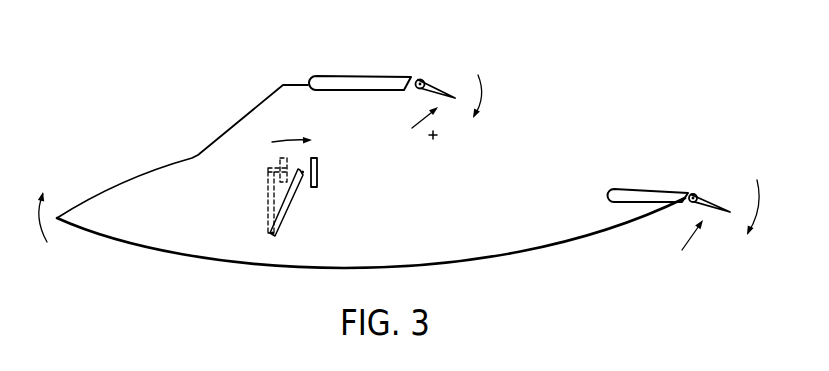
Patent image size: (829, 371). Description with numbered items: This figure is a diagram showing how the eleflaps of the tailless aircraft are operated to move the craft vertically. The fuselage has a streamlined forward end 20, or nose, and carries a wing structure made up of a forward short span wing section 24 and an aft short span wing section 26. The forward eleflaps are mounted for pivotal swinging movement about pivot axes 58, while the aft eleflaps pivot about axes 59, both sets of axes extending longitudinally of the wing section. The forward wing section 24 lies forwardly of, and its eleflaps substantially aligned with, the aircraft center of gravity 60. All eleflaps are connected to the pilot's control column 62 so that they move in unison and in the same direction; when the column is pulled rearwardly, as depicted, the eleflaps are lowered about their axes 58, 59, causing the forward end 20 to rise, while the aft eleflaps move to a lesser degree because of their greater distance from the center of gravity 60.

The forward end 20 is at (84, 178).
The forward short span wing section 24 is at (372, 69).
The aft short span wing section 26 is at (644, 182).
The pivot axes 58 is at (424, 80).
The pivot axes 59 is at (697, 196).
The center of gravity 60 is at (436, 141).
The pilot's control column 62 is at (298, 216).